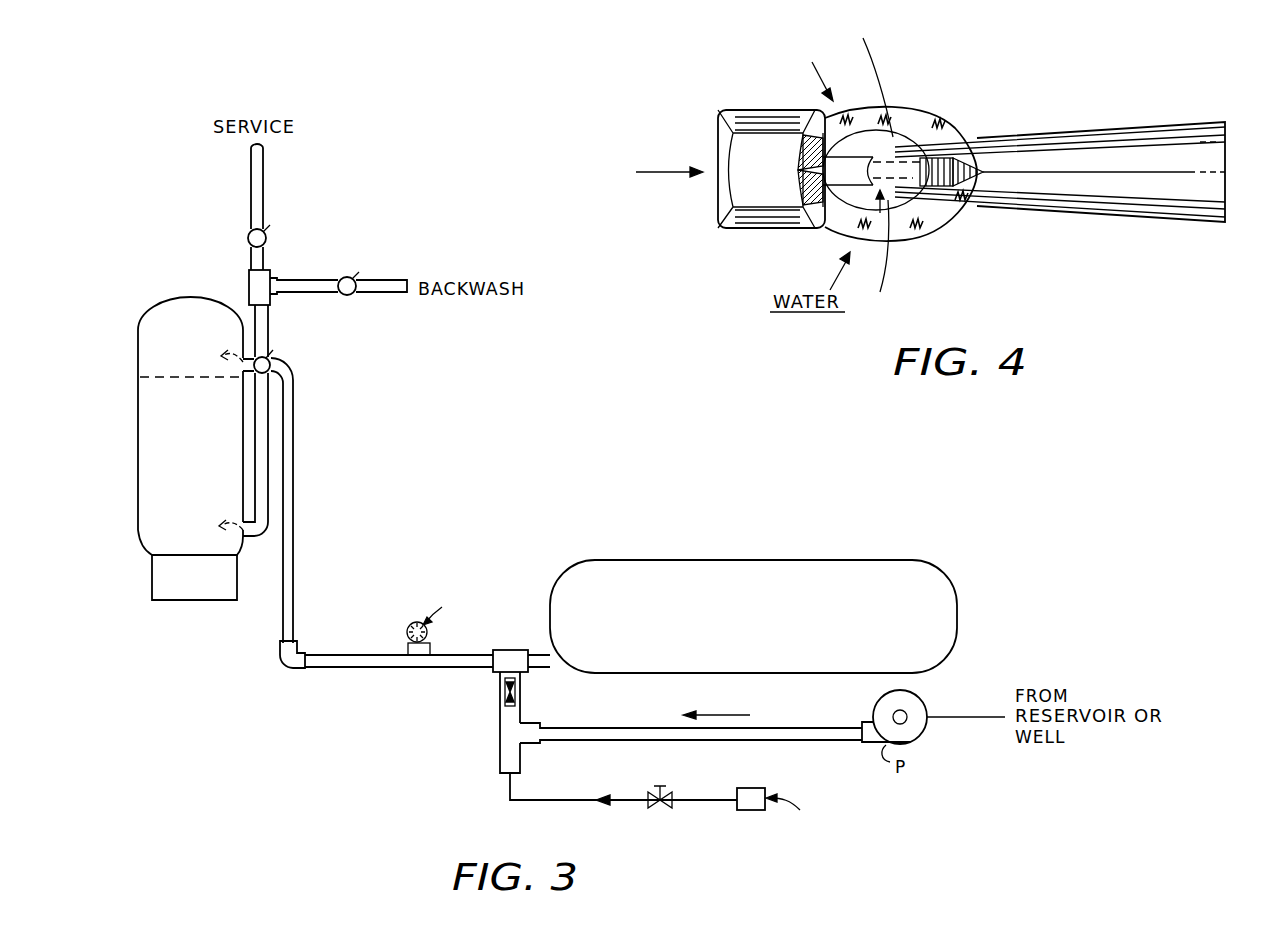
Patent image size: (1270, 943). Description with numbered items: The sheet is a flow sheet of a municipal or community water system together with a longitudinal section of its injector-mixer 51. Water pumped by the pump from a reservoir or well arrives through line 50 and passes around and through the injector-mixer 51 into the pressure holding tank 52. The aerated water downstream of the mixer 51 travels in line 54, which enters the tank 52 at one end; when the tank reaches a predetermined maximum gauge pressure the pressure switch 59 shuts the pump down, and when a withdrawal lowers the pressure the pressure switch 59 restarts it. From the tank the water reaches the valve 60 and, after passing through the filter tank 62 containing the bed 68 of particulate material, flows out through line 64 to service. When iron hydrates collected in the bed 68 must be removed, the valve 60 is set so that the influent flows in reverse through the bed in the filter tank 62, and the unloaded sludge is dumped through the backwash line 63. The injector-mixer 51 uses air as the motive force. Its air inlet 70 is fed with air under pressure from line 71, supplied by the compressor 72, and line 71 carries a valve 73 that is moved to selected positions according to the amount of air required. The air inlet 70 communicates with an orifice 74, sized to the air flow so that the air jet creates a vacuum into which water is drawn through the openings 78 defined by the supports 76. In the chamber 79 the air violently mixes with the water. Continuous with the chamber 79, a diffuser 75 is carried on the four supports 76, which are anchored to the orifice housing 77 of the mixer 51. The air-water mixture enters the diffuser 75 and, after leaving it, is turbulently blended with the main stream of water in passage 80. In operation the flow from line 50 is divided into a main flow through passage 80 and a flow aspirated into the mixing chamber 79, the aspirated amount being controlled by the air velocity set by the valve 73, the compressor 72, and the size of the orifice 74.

In FIG. 3, the line 50 is at (602, 727).
In FIG. 3, the injector-mixer 51 is at (503, 700).
In FIG. 4, the injector-mixer 51 is at (1075, 87).
In FIG. 3, the pressure holding tank 52 is at (788, 560).
In FIG. 3, the line 54 is at (325, 652).
In FIG. 3, the pressure switch 59 is at (407, 648).
In FIG. 3, the valve 60 is at (274, 358).
In FIG. 3, the filter tank 62 is at (141, 316).
In FIG. 3, the backwash line 63 is at (303, 282).
In FIG. 3, the line 64 is at (250, 206).
In FIG. 3, the bed 68 is at (207, 458).
In FIG. 4, the air inlet 70 is at (718, 180).
In FIG. 3, the line 71 is at (532, 800).
In FIG. 3, the compressor 72 is at (757, 788).
In FIG. 3, the valve 73 is at (665, 789).
In FIG. 4, the orifice 74 is at (797, 170).
In FIG. 4, the diffuser 75 is at (1178, 124).
In FIG. 4, the supports 76 is at (950, 150).
In FIG. 4, the orifice housing 77 is at (735, 123).
In FIG. 4, the openings 78 is at (908, 140).
In FIG. 4, the chamber 79 is at (850, 148).
In FIG. 3, the passage 80 is at (518, 670).